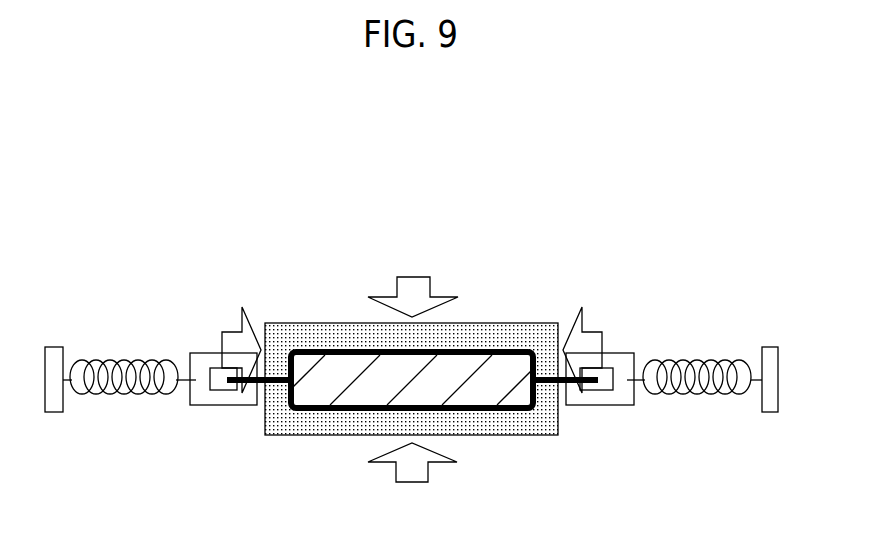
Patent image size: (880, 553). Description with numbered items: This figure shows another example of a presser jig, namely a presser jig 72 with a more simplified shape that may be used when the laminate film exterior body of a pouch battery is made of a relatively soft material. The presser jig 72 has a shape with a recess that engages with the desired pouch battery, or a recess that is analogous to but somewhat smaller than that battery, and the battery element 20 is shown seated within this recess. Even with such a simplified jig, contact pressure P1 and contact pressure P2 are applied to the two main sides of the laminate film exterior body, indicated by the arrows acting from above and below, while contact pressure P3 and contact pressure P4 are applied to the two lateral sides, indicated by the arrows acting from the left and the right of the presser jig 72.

The piezoelectric element 20 is at (347, 350).
The presser jig 72 is at (498, 335).
The contact pressure P1 is at (413, 282).
The contact pressure P2 is at (412, 479).
The contact pressure P3 is at (228, 347).
The contact pressure P4 is at (594, 347).